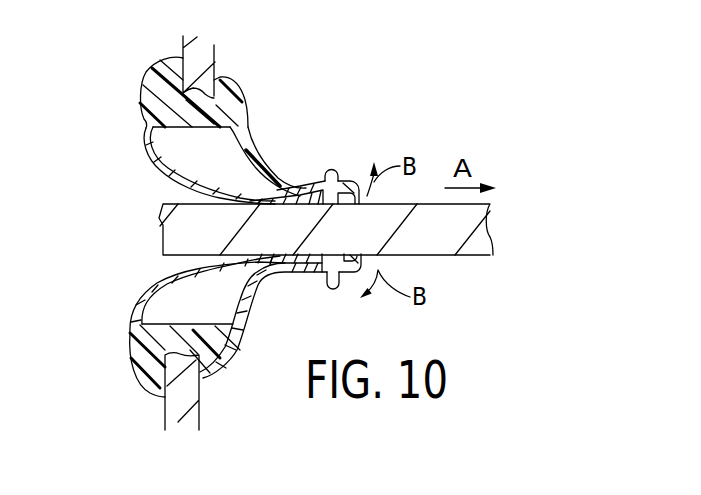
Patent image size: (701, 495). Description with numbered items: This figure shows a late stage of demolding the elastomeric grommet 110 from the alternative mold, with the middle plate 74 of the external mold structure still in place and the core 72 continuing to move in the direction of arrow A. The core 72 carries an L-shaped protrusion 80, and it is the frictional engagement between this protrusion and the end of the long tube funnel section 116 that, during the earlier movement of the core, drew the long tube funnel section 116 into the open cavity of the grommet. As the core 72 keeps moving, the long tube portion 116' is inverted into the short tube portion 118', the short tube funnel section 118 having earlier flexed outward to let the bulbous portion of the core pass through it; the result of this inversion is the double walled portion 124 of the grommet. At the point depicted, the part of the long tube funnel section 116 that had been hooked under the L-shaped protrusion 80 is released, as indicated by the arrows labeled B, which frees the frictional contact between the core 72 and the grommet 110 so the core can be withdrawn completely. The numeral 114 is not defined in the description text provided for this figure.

The core 72 is at (450, 241).
The middle plate 74 is at (207, 52).
The L-shaped protrusion 80 is at (342, 166).
The grommet 110 is at (100, 343).
The rolled end / collar of clip 114 is at (146, 73).
The long tube funnel section 116 is at (176, 168).
The long tube portion 116' is at (209, 308).
The short tube funnel section 118 is at (277, 132).
The short tube portion 118' is at (281, 316).
The double walled portion 124 is at (316, 165).